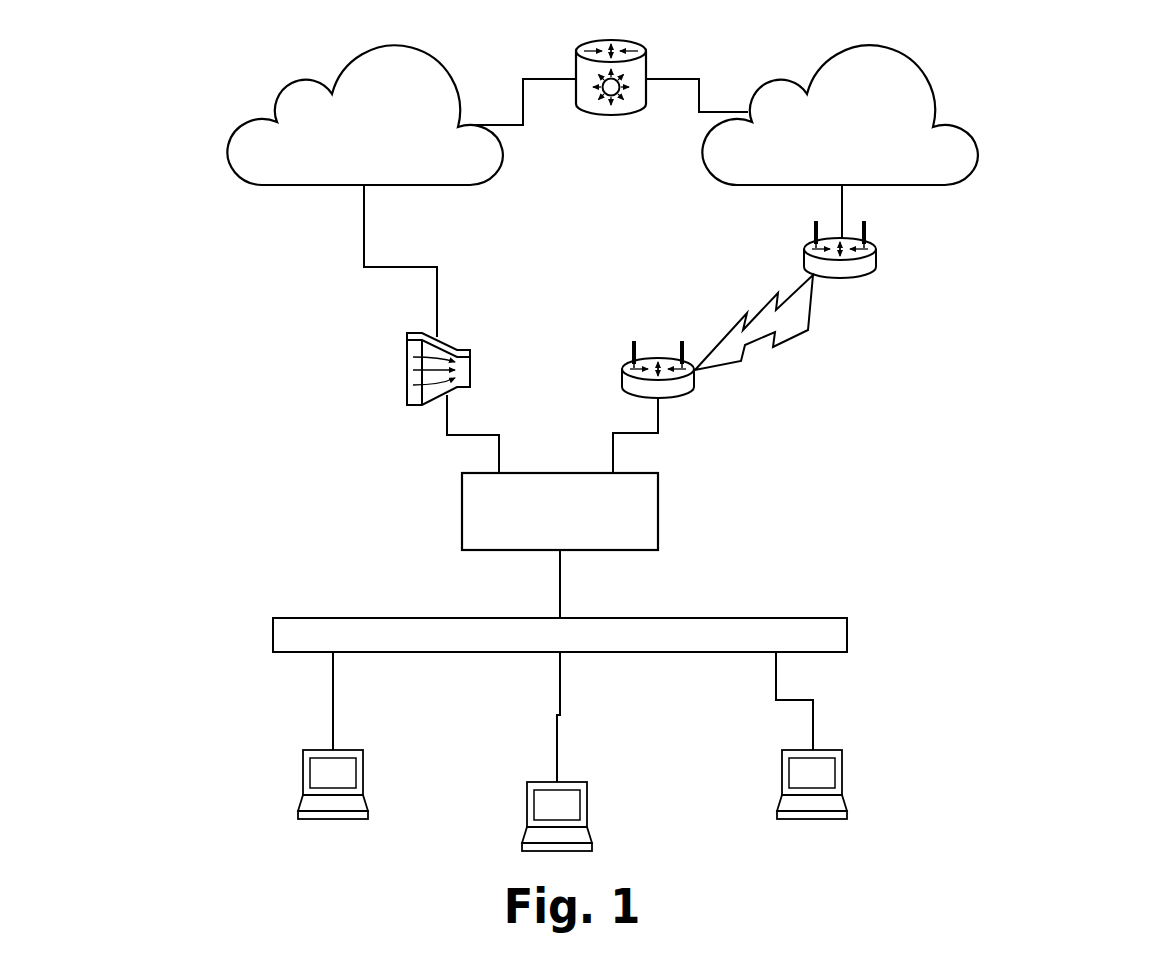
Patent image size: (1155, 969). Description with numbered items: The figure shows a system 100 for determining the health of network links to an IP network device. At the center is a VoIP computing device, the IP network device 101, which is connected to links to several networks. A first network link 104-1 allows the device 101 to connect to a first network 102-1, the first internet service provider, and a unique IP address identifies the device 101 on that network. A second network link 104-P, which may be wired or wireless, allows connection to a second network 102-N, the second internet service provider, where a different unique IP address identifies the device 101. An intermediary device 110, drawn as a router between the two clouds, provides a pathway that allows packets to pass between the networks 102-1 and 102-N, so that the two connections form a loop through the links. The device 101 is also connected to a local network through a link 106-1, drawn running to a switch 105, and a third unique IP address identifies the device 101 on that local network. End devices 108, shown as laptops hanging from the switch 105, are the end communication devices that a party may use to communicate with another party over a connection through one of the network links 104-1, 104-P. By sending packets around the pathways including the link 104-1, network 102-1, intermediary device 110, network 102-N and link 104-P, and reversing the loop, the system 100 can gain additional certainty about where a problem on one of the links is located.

The system 100 is at (178, 83).
The network 102-1 is at (245, 193).
The network 102-N is at (977, 175).
The intermediary device 110 is at (670, 57).
The network link 104-1 is at (350, 353).
The network link 104-P is at (838, 343).
The IP network device 101 is at (682, 515).
The link 106-1 is at (537, 602).
The switch 105 is at (862, 633).
The end device 108 is at (862, 778).